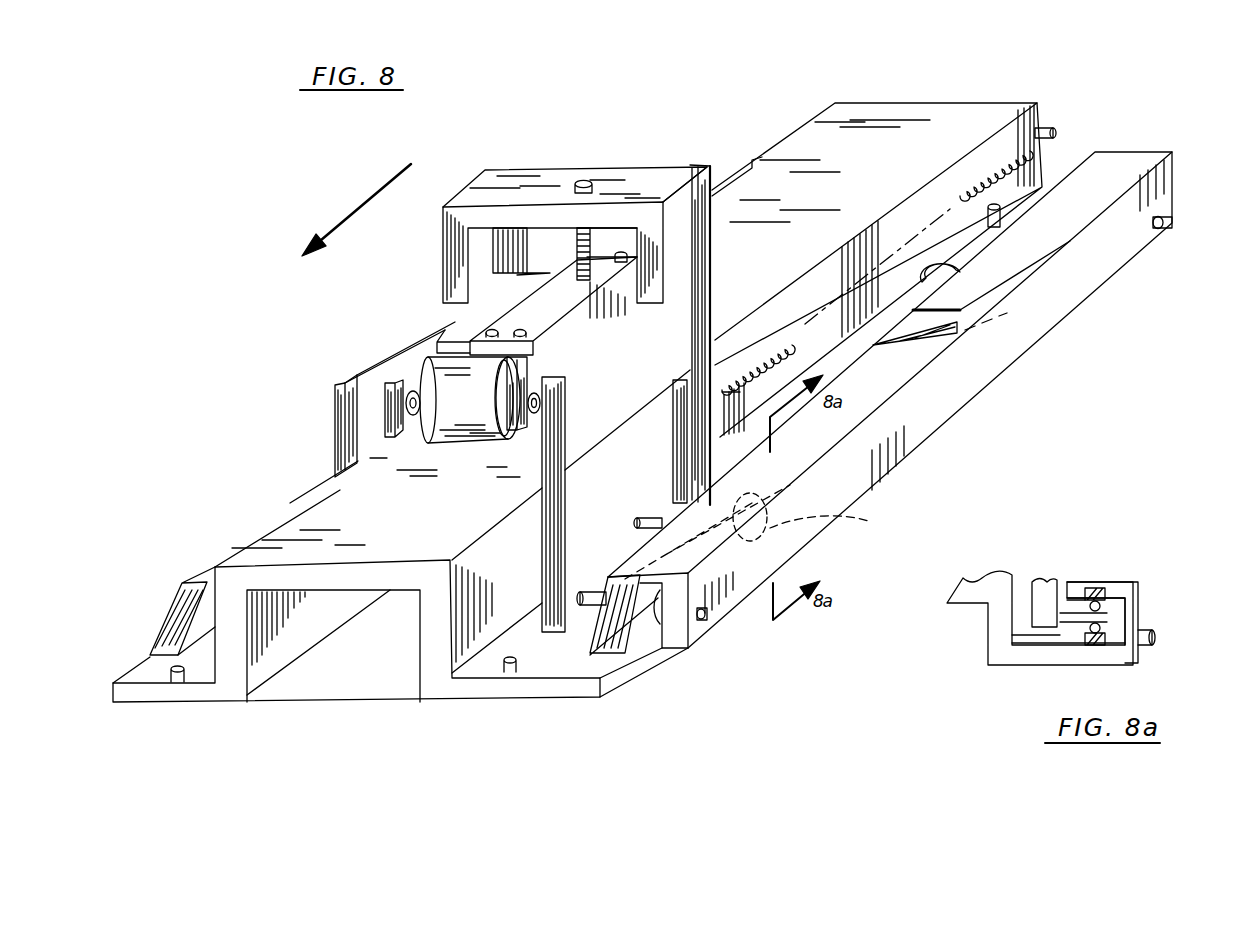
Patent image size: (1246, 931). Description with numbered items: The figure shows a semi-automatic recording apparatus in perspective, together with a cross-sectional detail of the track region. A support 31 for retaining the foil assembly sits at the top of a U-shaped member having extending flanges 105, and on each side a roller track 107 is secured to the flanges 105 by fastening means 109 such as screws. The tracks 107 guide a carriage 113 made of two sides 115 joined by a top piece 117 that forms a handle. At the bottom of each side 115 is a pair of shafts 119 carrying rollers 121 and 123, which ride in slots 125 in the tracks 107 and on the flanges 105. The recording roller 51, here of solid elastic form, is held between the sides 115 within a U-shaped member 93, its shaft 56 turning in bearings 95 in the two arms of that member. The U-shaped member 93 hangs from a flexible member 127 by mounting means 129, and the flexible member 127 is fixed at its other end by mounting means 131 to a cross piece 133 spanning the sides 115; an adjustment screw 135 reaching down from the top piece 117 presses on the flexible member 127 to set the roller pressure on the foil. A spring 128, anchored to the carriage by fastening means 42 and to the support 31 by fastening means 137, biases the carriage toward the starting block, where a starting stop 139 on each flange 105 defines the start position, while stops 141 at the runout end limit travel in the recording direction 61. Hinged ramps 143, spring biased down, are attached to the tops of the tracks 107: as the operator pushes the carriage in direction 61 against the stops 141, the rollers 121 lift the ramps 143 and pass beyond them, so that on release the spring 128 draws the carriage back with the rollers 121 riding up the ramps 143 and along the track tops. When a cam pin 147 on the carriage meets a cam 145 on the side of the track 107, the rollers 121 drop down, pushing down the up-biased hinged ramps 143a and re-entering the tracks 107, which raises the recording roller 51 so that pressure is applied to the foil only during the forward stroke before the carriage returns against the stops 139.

In FIG. 8, the support 31 is at (850, 188).
In FIG. 8, the fastening means 42 is at (722, 390).
In FIG. 8, the recording roller 51 is at (465, 430).
In FIG. 8, the shaft 56 is at (405, 420).
In FIG. 8, the direction of recording 61 is at (362, 196).
In FIG. 8, the U-shaped member 93 is at (470, 338).
In FIG. 8, the bearings 95 is at (409, 392).
In FIG. 8, the flanges 105 is at (150, 677).
In FIG. 8a, the flanges 105 is at (1020, 668).
In FIG. 8, the roller track 107 is at (193, 583).
In FIG. 8a, the roller track 107 is at (1138, 584).
In FIG. 8, the fastening means 109 is at (703, 621).
In FIG. 8a, the fastening means 109 is at (1144, 642).
In FIG. 8, the carriage 113 is at (378, 342).
In FIG. 8, the sides 115 is at (693, 298).
In FIG. 8a, the sides 115 is at (1030, 585).
In FIG. 8, the top piece 117 is at (686, 162).
In FIG. 8, the shafts 119 is at (683, 503).
In FIG. 8a, the shafts 119 is at (1015, 647).
In FIG. 8, the rollers 121 is at (693, 587).
In FIG. 8, the rollers 123 is at (838, 520).
In FIG. 8a, the rollers 123 is at (1077, 593).
In FIG. 8a, the slots 125 is at (1097, 590).
In FIG. 8, the flexible member 127 is at (497, 317).
In FIG. 8, the spring 128 is at (992, 160).
In FIG. 8, the mounting means 129 is at (494, 329).
In FIG. 8, the mounting means 131 is at (621, 255).
In FIG. 8, the cross piece 133 is at (522, 328).
In FIG. 8, the adjustment screw 135 is at (584, 181).
In FIG. 8, the fastening means 137 is at (1055, 133).
In FIG. 8, the starting stop 139 is at (1001, 213).
In FIG. 8, the stops 141 is at (185, 676).
In FIG. 8, the ramps 143 is at (173, 608).
In FIG. 8, the hinged ramps 143a is at (955, 320).
In FIG. 8, the cam 145 is at (962, 277).
In FIG. 8, the cam pin 147 is at (651, 517).